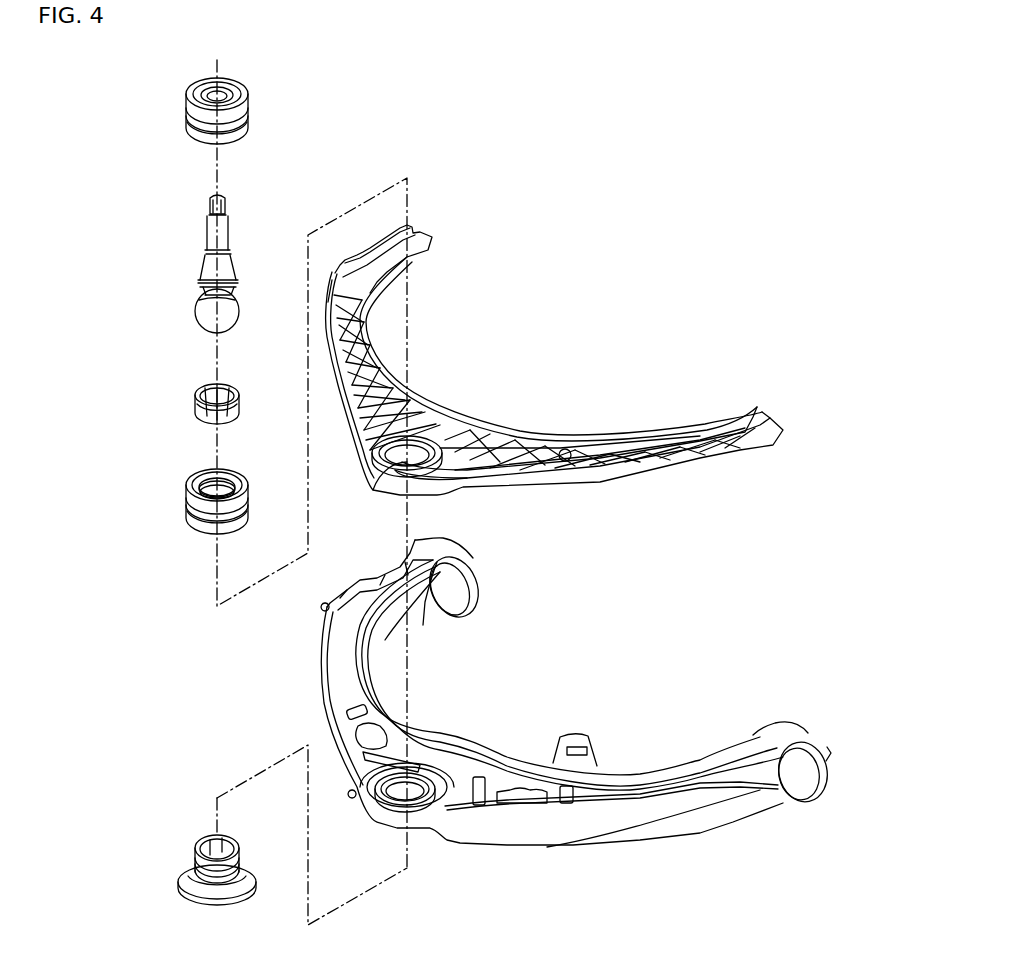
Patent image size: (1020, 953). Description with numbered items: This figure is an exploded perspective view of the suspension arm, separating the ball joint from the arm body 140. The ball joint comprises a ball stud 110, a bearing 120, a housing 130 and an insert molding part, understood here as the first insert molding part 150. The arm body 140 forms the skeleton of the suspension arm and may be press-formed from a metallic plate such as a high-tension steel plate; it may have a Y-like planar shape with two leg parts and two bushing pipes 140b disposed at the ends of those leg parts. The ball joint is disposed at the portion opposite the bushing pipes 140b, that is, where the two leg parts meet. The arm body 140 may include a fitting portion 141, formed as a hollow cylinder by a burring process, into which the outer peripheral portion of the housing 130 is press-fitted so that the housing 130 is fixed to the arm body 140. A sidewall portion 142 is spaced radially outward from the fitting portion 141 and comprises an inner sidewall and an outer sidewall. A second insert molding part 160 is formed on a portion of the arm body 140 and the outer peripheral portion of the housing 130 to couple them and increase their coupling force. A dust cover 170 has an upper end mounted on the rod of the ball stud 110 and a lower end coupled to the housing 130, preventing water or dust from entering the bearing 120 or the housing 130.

The ball stud 110 is at (240, 256).
The bearing 120 is at (244, 380).
The housing 130 is at (246, 466).
The arm body 140 is at (577, 680).
The bushing pipe 140b is at (443, 550).
The fitting portion 141 is at (418, 775).
The sidewall portion 142 is at (390, 635).
The first insert molding part 150 is at (248, 840).
The second insert molding part 160 is at (525, 424).
The dust cover 170 is at (258, 102).